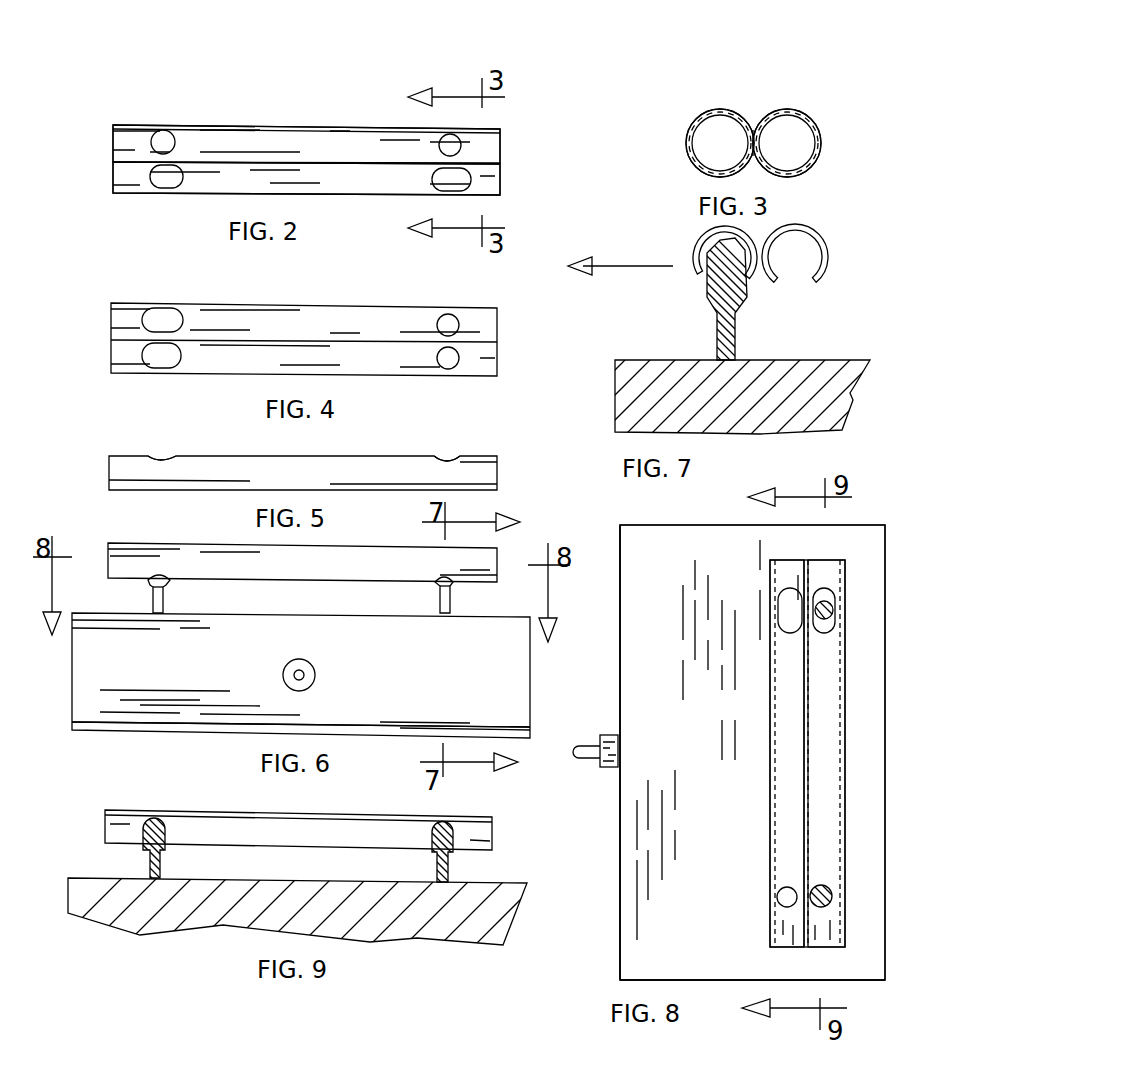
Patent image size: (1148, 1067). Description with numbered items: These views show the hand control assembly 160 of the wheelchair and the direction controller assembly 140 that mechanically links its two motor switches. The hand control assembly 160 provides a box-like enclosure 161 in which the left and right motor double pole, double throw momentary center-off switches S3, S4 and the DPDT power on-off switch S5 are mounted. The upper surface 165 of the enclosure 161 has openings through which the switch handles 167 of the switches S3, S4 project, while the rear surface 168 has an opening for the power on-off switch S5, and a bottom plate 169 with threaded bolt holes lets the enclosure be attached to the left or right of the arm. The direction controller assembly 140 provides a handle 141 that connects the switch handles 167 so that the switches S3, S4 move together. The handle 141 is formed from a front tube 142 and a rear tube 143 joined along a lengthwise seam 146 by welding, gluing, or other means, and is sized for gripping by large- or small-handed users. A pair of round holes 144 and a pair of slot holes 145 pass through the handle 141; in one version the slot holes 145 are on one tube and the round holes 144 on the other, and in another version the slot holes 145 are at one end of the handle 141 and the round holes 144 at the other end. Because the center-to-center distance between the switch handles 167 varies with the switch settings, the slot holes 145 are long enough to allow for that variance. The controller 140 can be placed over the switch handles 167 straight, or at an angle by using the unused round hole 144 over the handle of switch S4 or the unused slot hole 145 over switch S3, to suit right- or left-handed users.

In FIG. 2, the direction controller assembly 140 is at (225, 108).
In FIG. 3, the direction controller assembly 140 is at (672, 122).
In FIG. 7, the direction controller assembly 140 is at (830, 285).
In FIG. 4, the direction controller assembly 140 is at (304, 339).
In FIG. 5, the direction controller assembly 140 is at (303, 473).
In FIG. 6, the direction controller assembly 140 is at (302, 562).
In FIG. 9, the direction controller assembly 140 is at (255, 805).
In FIG. 8, the direction controller assembly 140 is at (758, 815).
In FIG. 2, the handle 141 is at (330, 122).
In FIG. 2, the front tube 142 is at (502, 145).
In FIG. 3, the front tube 142 is at (681, 160).
In FIG. 8, the front tube 142 is at (825, 561).
In FIG. 2, the rear tube 143 is at (502, 183).
In FIG. 3, the rear tube 143 is at (840, 110).
In FIG. 8, the rear tube 143 is at (787, 551).
In FIG. 2, the round holes 144 is at (163, 130).
In FIG. 4, the round holes 144 is at (448, 322).
In FIG. 5, the round holes 144 is at (447, 458).
In FIG. 8, the round holes 144 is at (783, 896).
In FIG. 2, the slot holes 145 is at (448, 178).
In FIG. 4, the slot holes 145 is at (163, 320).
In FIG. 5, the slot holes 145 is at (160, 455).
In FIG. 8, the slot holes 145 is at (788, 612).
In FIG. 3, the lengthwise seam 146 is at (755, 128).
In FIG. 9, the hand control assembly 160 is at (357, 947).
In FIG. 8, the hand control assembly 160 is at (685, 905).
In FIG. 6, the enclosure 161 is at (210, 670).
In FIG. 8, the enclosure 161 is at (620, 552).
In FIG. 7, the upper surface 165 is at (640, 360).
In FIG. 8, the upper surface 165 is at (707, 893).
In FIG. 7, the switch handles 167 is at (717, 318).
In FIG. 6, the switch handles 167 is at (458, 599).
In FIG. 9, the switch handles 167 is at (452, 868).
In FIG. 8, the switch handles 167 is at (832, 610).
In FIG. 8, the rear surface 168 is at (617, 892).
In FIG. 6, the bottom plate 169 is at (117, 728).
In FIG. 6, the left motor control switch S3 is at (167, 599).
In FIG. 6, the right motor control switch S4 is at (433, 599).
In FIG. 6, the power on-off switch S5 is at (315, 675).
In FIG. 8, the power on-off switch S5 is at (572, 760).